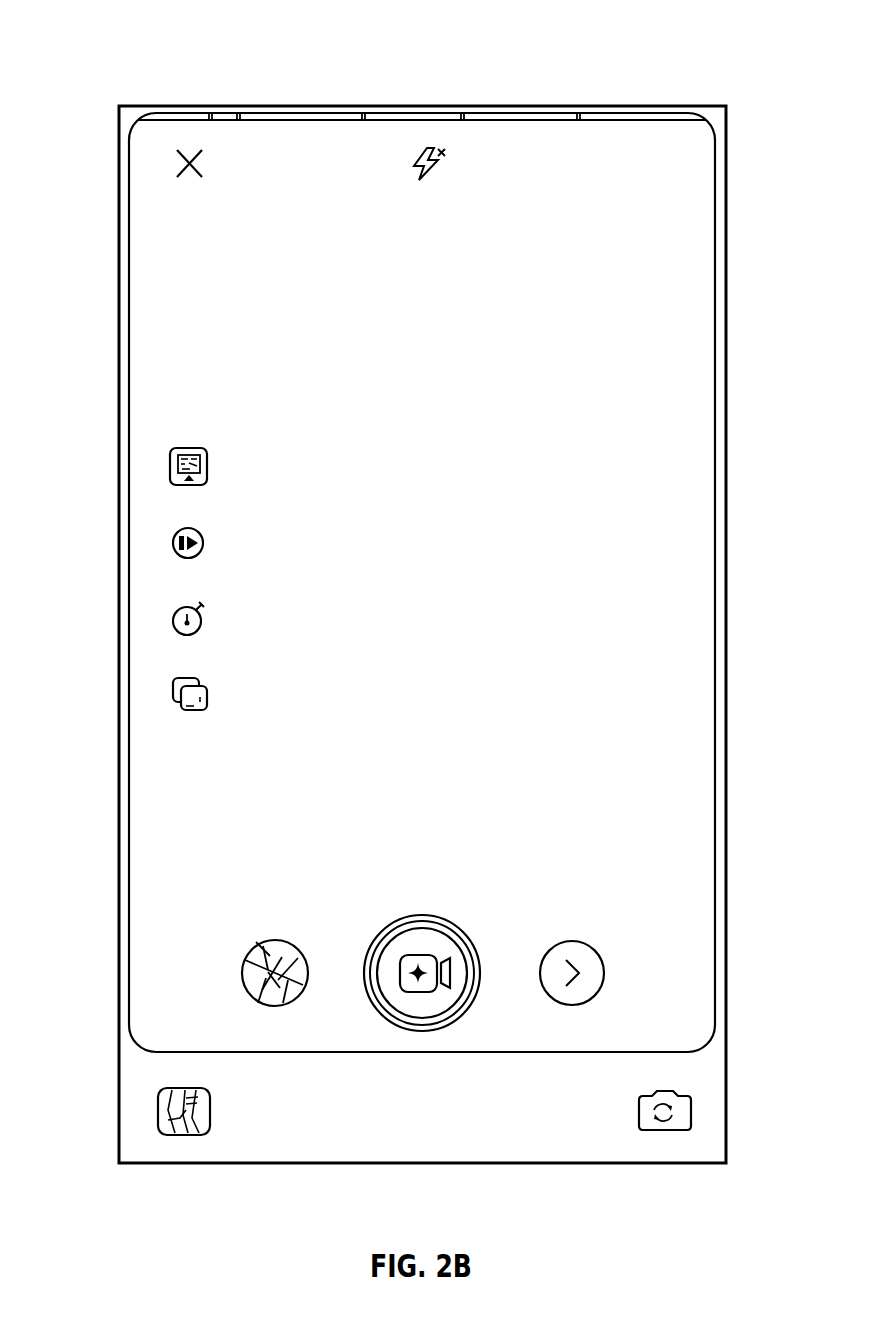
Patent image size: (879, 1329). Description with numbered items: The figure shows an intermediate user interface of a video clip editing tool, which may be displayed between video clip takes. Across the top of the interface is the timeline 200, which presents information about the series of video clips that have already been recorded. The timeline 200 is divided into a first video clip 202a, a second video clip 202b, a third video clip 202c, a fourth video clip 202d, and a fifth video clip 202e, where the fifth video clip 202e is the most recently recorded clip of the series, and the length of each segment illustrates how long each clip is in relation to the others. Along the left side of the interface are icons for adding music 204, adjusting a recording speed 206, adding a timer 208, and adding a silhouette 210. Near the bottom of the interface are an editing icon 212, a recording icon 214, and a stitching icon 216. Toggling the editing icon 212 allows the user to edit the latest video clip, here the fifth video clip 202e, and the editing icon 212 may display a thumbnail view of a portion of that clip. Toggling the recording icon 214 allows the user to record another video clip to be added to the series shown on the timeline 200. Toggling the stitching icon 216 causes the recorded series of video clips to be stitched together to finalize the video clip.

The timeline 200 is at (143, 100).
The first video clip 202a is at (195, 114).
The second video clip 202b is at (227, 114).
The third video clip 202c is at (313, 114).
The fourth video clip 202d is at (423, 114).
The fifth video clip 202e is at (513, 114).
The icon for adding music 204 is at (170, 465).
The icon for adjusting a recording speed 206 is at (173, 543).
The icon for adding a timer 208 is at (173, 621).
The icon for adding a silhouette 210 is at (173, 690).
The editing icon 212 is at (242, 975).
The recording icon 214 is at (463, 933).
The stitching icon 216 is at (604, 973).